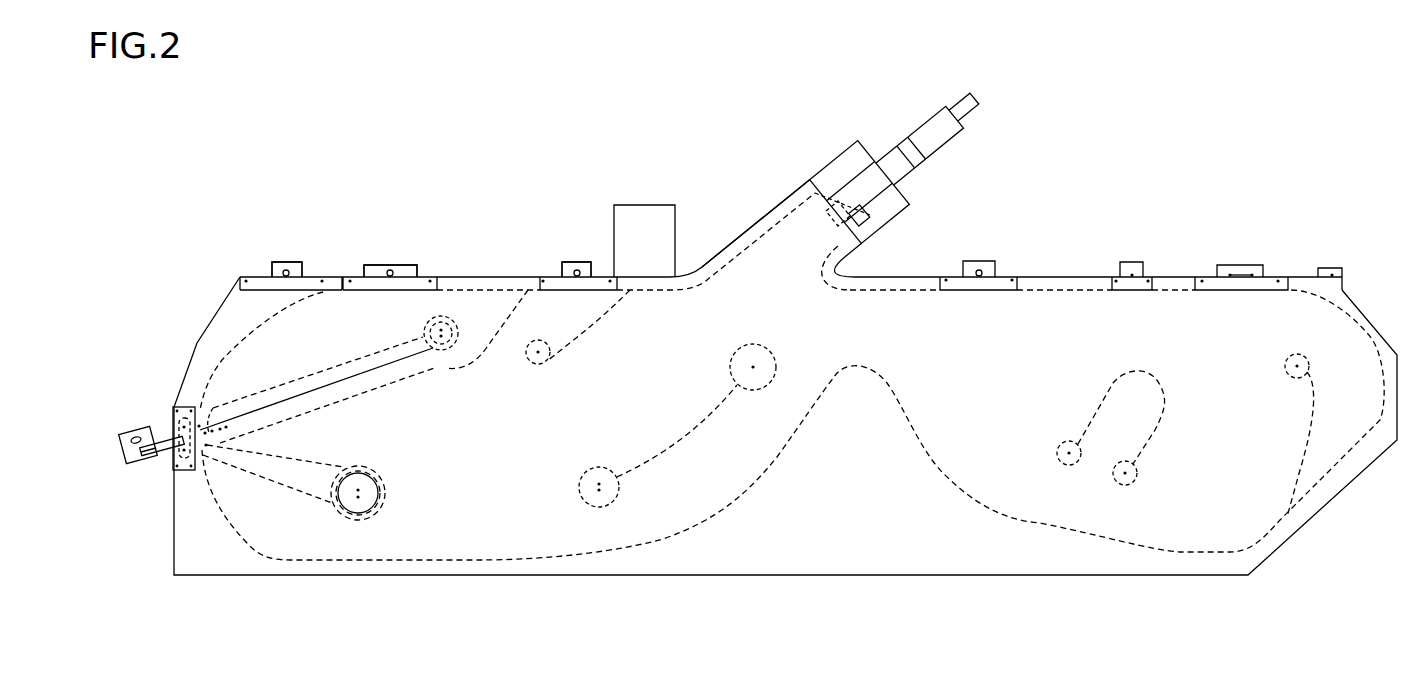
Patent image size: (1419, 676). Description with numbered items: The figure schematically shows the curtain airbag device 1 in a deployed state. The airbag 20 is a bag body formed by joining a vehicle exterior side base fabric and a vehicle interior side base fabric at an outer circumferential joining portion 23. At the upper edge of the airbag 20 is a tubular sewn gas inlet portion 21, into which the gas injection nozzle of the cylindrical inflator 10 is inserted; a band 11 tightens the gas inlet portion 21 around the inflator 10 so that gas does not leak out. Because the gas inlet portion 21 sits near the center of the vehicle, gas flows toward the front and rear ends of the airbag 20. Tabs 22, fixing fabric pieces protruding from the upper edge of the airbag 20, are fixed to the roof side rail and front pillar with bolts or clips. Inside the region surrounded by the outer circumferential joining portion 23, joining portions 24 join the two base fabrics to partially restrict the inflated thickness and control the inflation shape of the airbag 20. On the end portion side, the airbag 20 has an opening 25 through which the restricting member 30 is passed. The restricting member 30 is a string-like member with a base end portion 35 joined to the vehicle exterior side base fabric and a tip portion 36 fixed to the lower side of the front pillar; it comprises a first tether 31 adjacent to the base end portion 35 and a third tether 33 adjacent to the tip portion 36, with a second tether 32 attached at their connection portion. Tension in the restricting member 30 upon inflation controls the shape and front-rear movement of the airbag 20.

The curtain airbag device 1 is at (530, 128).
The inflator 10 is at (932, 128).
The band 11 is at (827, 180).
The airbag 20 is at (225, 298).
The gas inlet portion 21 is at (757, 233).
The tabs 22 is at (286, 268).
The outer circumferential joining portion 23 is at (1038, 520).
The joining portions 24 is at (1150, 372).
The opening 25 is at (174, 468).
The restricting member 30 is at (250, 385).
The first tether 31 is at (373, 350).
The second tether 32 is at (282, 480).
The third tether 33 is at (172, 440).
The base end portion 35 is at (470, 335).
The tip portion 36 is at (132, 430).